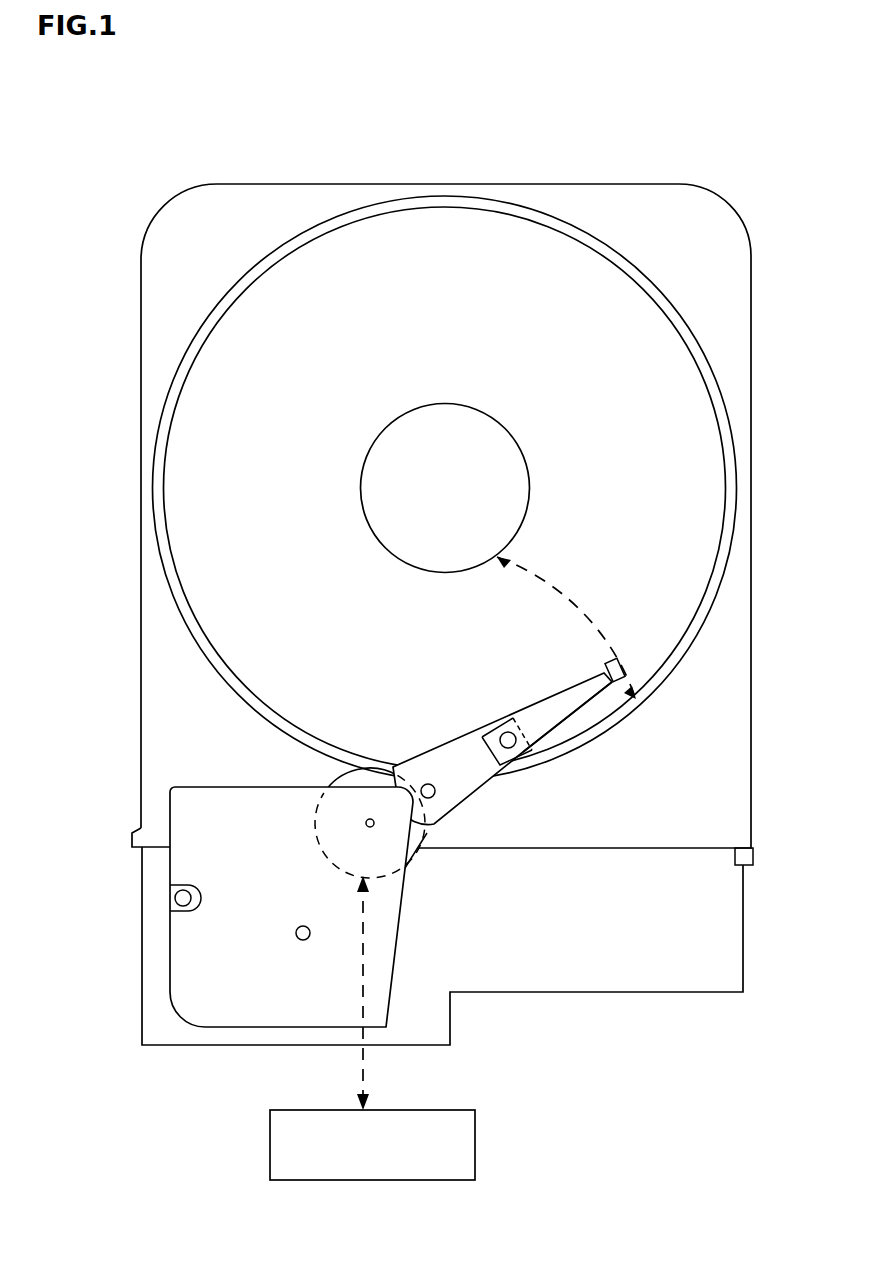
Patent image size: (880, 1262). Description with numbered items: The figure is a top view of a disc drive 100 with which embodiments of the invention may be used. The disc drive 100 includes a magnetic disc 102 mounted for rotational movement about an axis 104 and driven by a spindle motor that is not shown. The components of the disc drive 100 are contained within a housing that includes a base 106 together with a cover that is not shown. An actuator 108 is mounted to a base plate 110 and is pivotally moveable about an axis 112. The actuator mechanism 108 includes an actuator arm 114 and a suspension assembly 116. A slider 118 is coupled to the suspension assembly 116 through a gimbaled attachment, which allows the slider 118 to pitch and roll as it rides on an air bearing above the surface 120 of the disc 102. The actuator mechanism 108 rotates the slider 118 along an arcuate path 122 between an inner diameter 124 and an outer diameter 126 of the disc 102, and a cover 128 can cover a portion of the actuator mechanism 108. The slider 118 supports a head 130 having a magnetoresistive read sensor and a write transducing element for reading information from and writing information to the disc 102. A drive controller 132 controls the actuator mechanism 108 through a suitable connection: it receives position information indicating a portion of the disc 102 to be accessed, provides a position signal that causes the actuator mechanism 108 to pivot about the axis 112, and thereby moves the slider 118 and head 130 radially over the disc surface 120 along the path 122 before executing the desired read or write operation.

The disc drive 100 is at (274, 166).
The magnetic disc 102 is at (450, 320).
The axis 104 is at (467, 487).
The base 106 is at (751, 300).
The actuator 108 is at (538, 780).
The base plate 110 is at (637, 992).
The axis 112 is at (367, 822).
The actuator arm 114 is at (447, 800).
The suspension assembly 116 is at (540, 705).
The slider 118 is at (607, 664).
The surface 120 is at (690, 437).
The arcuate path 122 is at (552, 590).
The inner diameter 124 is at (530, 480).
The outer diameter 126 is at (726, 480).
The cover 128 is at (248, 1015).
The head 130 is at (622, 660).
The drive controller 132 is at (475, 1148).